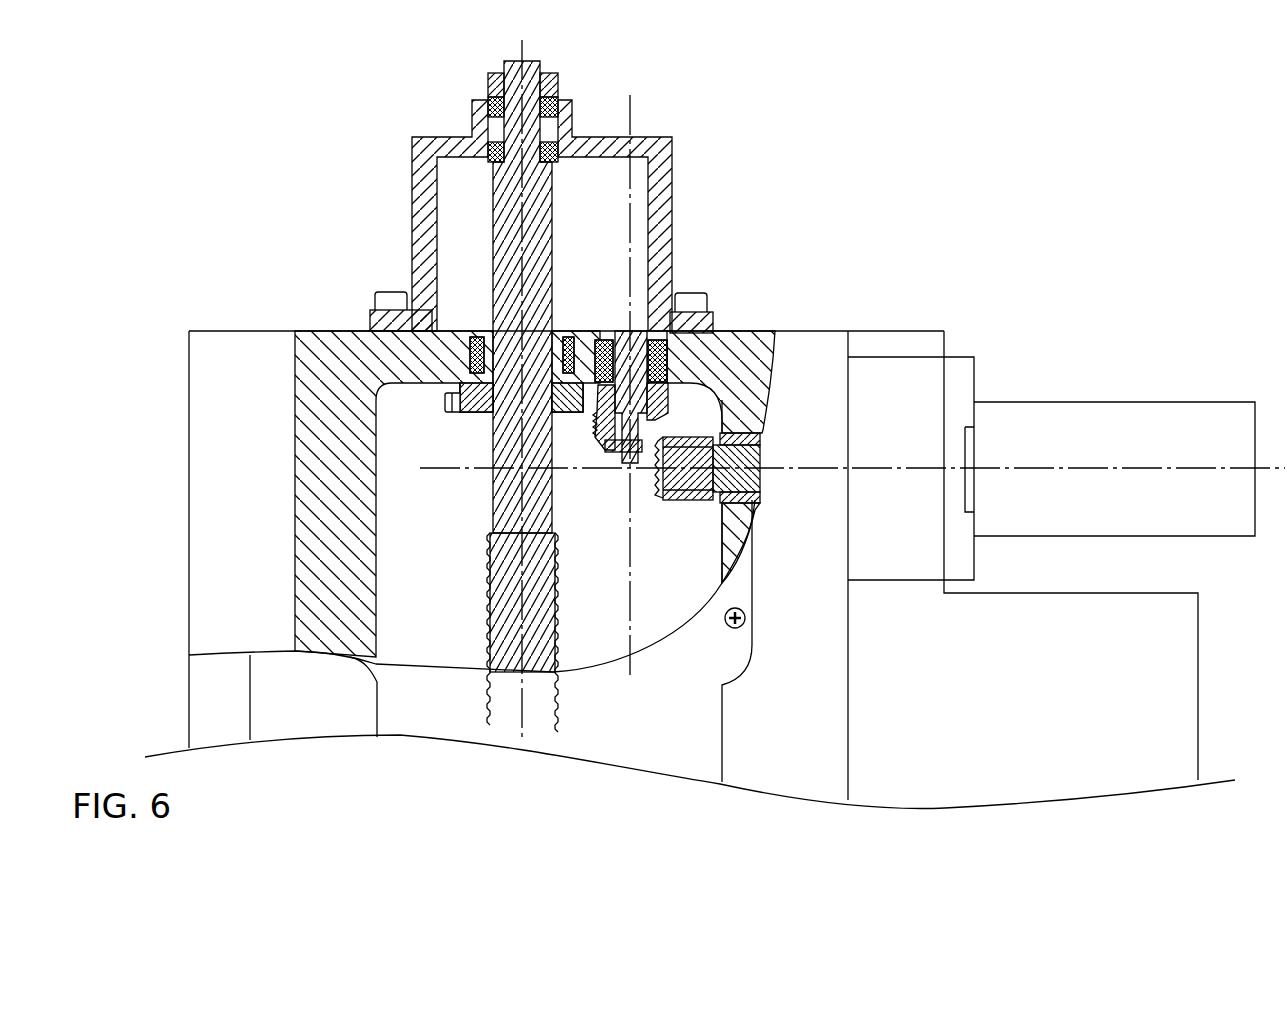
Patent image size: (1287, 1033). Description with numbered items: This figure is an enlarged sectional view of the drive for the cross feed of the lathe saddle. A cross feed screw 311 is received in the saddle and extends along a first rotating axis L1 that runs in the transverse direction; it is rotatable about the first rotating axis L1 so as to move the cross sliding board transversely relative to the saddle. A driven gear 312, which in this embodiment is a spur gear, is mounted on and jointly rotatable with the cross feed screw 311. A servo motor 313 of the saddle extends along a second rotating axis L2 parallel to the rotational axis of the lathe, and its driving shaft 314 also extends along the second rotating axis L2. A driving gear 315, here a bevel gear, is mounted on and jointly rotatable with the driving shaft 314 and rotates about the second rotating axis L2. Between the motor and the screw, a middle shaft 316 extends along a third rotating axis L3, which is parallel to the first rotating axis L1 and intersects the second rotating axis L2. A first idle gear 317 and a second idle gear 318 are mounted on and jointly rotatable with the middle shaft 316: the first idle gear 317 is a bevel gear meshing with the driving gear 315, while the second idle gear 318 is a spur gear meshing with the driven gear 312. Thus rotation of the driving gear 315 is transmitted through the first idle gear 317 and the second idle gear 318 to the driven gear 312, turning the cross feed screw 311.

The cross feed screw 311 is at (492, 652).
The driven gear 312 is at (420, 402).
The servo motor 313 is at (1110, 428).
The driving shaft 314 is at (766, 462).
The driving gear 315 is at (762, 438).
The middle shaft 316 is at (636, 365).
The first idle gear 317 is at (660, 432).
The second idle gear 318 is at (665, 420).
The first rotating axis L1 is at (530, 46).
The second rotating axis L2 is at (1280, 466).
The third rotating axis L3 is at (638, 108).